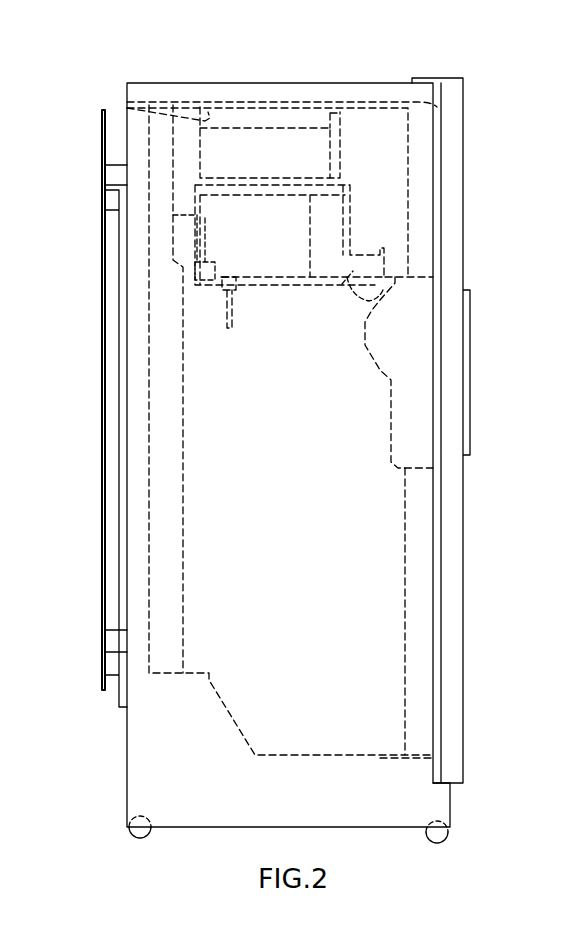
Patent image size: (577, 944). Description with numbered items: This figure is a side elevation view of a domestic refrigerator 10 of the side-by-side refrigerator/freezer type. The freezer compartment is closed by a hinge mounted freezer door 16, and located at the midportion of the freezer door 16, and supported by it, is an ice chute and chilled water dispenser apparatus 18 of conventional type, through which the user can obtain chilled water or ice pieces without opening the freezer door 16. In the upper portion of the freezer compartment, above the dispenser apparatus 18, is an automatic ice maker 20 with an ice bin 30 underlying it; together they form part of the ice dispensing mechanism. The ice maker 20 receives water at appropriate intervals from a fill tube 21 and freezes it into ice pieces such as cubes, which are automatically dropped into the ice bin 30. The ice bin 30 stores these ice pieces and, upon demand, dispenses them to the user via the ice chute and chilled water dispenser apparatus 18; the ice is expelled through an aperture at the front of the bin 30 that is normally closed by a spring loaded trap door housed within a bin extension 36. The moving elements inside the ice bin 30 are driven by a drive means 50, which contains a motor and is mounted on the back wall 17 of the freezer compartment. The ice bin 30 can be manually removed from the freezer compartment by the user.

The domestic refrigerator 10 is at (338, 73).
The freezer door 16 is at (463, 240).
The back wall 17 is at (184, 368).
The ice chute and chilled water dispenser apparatus 18 is at (391, 383).
The automatic ice maker 20 is at (341, 150).
The fill tube 21 is at (188, 105).
The ice bin 30 is at (347, 215).
The bin extension 36 is at (347, 278).
The drive means 50 is at (186, 262).